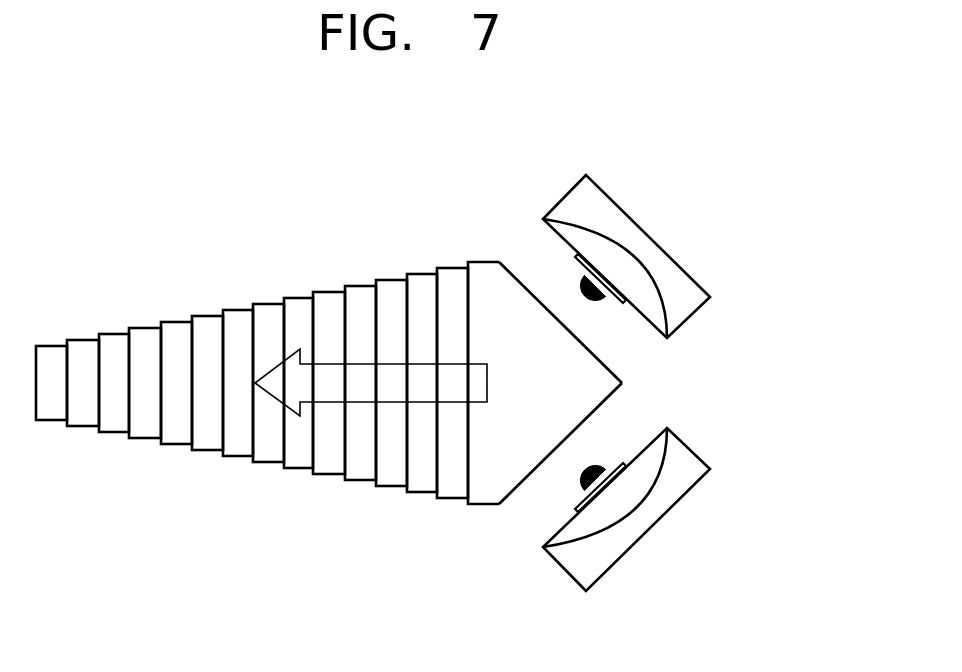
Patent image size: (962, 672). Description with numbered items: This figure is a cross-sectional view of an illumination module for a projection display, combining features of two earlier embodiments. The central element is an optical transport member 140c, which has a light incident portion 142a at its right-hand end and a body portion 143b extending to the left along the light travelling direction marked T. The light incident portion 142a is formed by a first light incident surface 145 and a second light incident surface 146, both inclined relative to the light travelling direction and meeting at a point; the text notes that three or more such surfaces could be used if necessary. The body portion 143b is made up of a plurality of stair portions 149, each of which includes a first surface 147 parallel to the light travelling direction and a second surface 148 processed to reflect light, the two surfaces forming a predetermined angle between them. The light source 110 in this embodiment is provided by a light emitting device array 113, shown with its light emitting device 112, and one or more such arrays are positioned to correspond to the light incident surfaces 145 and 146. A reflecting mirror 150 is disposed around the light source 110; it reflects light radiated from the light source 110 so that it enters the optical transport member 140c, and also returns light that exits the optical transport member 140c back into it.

The light source 110 is at (553, 568).
The light emitting element 112 is at (580, 482).
The light emitting device array 113 is at (580, 503).
The optical transport member 140c is at (418, 515).
The light incident portion 142a is at (773, 342).
The body portion 143b is at (263, 303).
The first light incident surface 145 is at (613, 373).
The second light incident surface 146 is at (613, 397).
The first surface 147 is at (482, 261).
The second surface 148 is at (445, 267).
The stair portion 149 is at (507, 178).
The reflecting mirror 150 is at (617, 562).